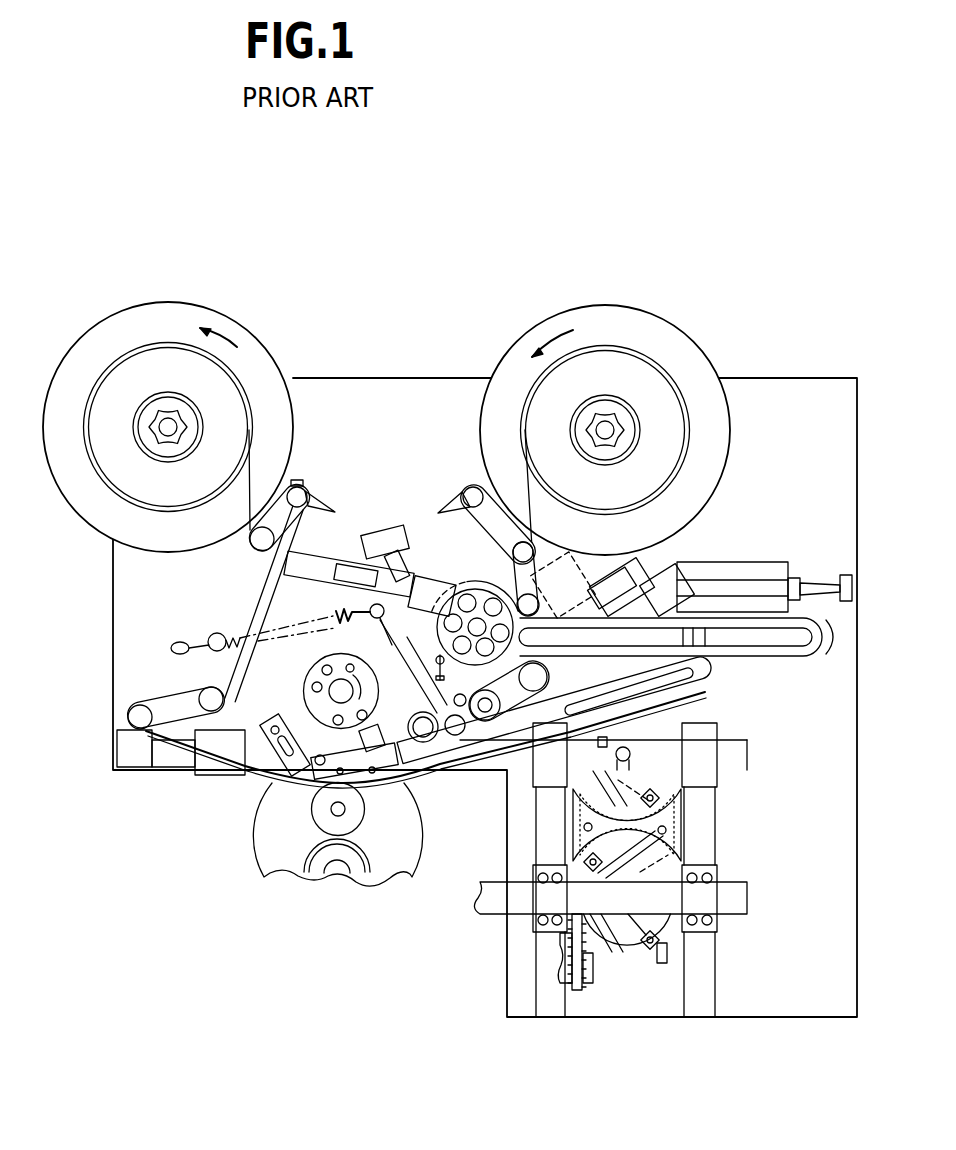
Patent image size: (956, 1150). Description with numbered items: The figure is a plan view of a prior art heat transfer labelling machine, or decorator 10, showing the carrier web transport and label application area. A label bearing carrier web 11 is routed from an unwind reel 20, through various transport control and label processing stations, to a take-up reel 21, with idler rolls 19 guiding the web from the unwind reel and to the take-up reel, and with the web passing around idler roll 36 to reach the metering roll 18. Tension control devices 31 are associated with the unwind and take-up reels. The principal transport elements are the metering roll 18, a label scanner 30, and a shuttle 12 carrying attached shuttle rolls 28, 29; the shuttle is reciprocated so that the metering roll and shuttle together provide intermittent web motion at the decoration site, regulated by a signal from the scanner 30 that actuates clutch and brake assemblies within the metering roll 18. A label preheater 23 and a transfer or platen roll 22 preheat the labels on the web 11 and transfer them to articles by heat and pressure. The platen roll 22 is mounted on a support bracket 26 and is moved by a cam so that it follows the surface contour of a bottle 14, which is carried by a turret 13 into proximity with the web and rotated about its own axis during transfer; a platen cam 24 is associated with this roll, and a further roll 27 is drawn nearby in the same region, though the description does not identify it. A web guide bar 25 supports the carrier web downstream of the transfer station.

The decorator 10 is at (624, 1093).
The label bearing carrier web 11 is at (168, 750).
The shuttle 12 is at (727, 753).
The turret 13 is at (272, 857).
The bottle 14 is at (366, 822).
The metering roll 18 is at (453, 592).
The idler rolls 19 is at (252, 545).
The unwind reel 20 is at (600, 320).
The take-up reel 21 is at (168, 322).
The transfer or platen roll 22 is at (392, 795).
The label preheater 23 is at (524, 788).
The platen cam 24 is at (302, 697).
The web guide bar 25 is at (272, 773).
The support bracket 26 is at (427, 764).
The roller 27 is at (488, 721).
The shuttle roll 28 is at (124, 737).
The shuttle roll 29 is at (612, 703).
The label scanner 30 is at (680, 557).
The tension control devices 31 is at (308, 493).
The idler roll 36 is at (492, 588).